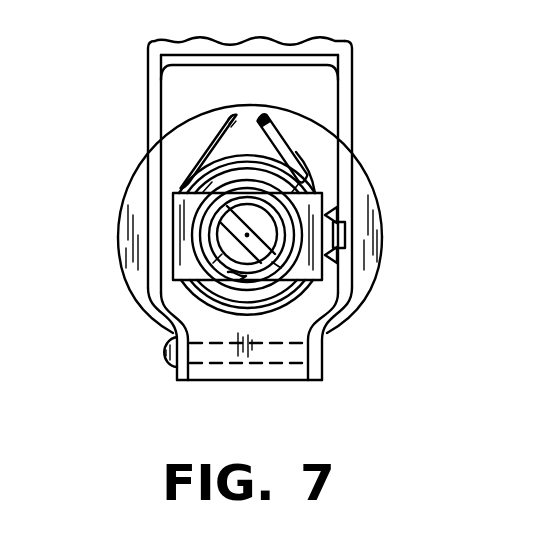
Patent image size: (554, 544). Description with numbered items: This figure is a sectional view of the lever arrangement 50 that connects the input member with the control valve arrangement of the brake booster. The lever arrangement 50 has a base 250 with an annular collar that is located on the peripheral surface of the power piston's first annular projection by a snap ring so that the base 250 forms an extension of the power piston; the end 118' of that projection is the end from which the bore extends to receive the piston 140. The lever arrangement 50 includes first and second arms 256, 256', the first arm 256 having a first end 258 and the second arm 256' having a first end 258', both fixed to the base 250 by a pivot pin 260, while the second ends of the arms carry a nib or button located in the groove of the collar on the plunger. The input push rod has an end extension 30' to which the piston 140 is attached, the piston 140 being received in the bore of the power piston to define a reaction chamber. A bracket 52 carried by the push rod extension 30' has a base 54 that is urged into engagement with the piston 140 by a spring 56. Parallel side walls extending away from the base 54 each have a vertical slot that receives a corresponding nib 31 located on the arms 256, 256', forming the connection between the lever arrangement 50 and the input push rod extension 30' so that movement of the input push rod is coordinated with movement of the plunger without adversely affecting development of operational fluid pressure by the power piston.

The lever arrangement 50 is at (358, 322).
The second arm 256' is at (196, 161).
The first arm 256 is at (393, 158).
The first end of second arm 258' is at (151, 356).
The first end of first arm 258 is at (367, 350).
The pivot pin 260 is at (165, 358).
The base 250 is at (263, 372).
The base of bracket 54 is at (196, 158).
The push rod extension 30' is at (158, 236).
The spring 56 is at (237, 276).
The bracket 52 is at (226, 118).
The end of first annular projection 118' is at (368, 120).
The piston 140 is at (305, 158).
The nib 31 is at (336, 233).